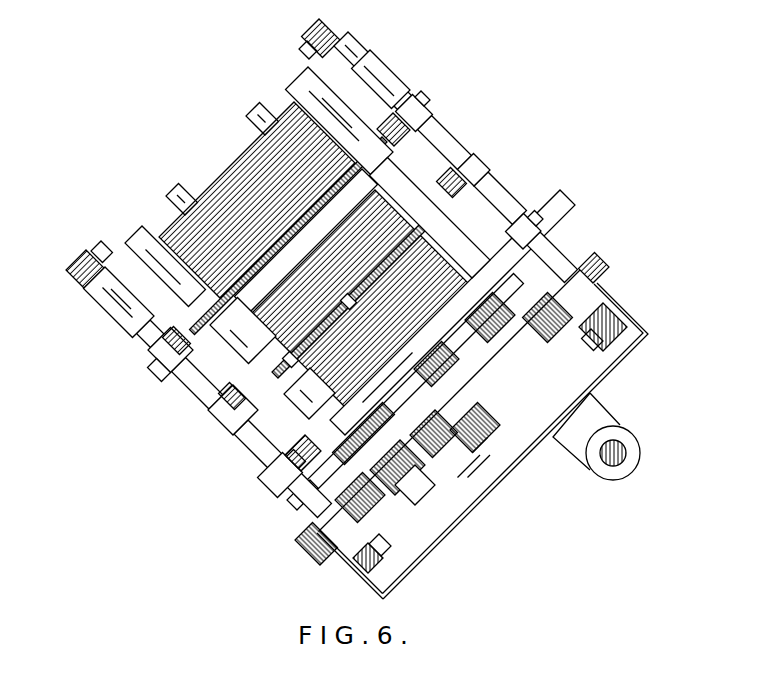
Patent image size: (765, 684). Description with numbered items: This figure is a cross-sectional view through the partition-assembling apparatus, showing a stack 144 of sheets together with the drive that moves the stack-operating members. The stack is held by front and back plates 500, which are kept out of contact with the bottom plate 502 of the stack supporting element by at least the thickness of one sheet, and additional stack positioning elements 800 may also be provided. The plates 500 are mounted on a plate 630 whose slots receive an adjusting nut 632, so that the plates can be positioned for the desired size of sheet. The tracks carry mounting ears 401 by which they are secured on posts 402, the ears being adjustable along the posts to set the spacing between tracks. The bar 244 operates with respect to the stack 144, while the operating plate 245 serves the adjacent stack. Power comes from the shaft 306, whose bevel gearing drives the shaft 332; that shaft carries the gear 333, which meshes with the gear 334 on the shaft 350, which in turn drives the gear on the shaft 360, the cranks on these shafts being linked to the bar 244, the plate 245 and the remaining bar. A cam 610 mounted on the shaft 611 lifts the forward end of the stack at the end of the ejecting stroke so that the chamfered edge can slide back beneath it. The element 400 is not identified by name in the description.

The stack 144 is at (240, 165).
The bar 244 is at (387, 245).
The operating plate 245 is at (333, 419).
The bottom plate 502 is at (210, 311).
The front and back plates 500 is at (293, 84).
The stack positioning elements 800 is at (252, 120).
The transverse shaft 400 is at (388, 124).
The post 402 is at (150, 338).
The mounting members or ears 401 is at (416, 102).
The plate 630 is at (476, 162).
The adjusting nut 632 is at (230, 392).
The shaft 611 is at (430, 238).
The cam 610 is at (436, 258).
The shaft 350 is at (424, 468).
The shaft 360 is at (480, 427).
The shaft 332 is at (548, 370).
The gear 333 is at (596, 267).
The gear 334 is at (312, 552).
The shaft 306 is at (608, 461).